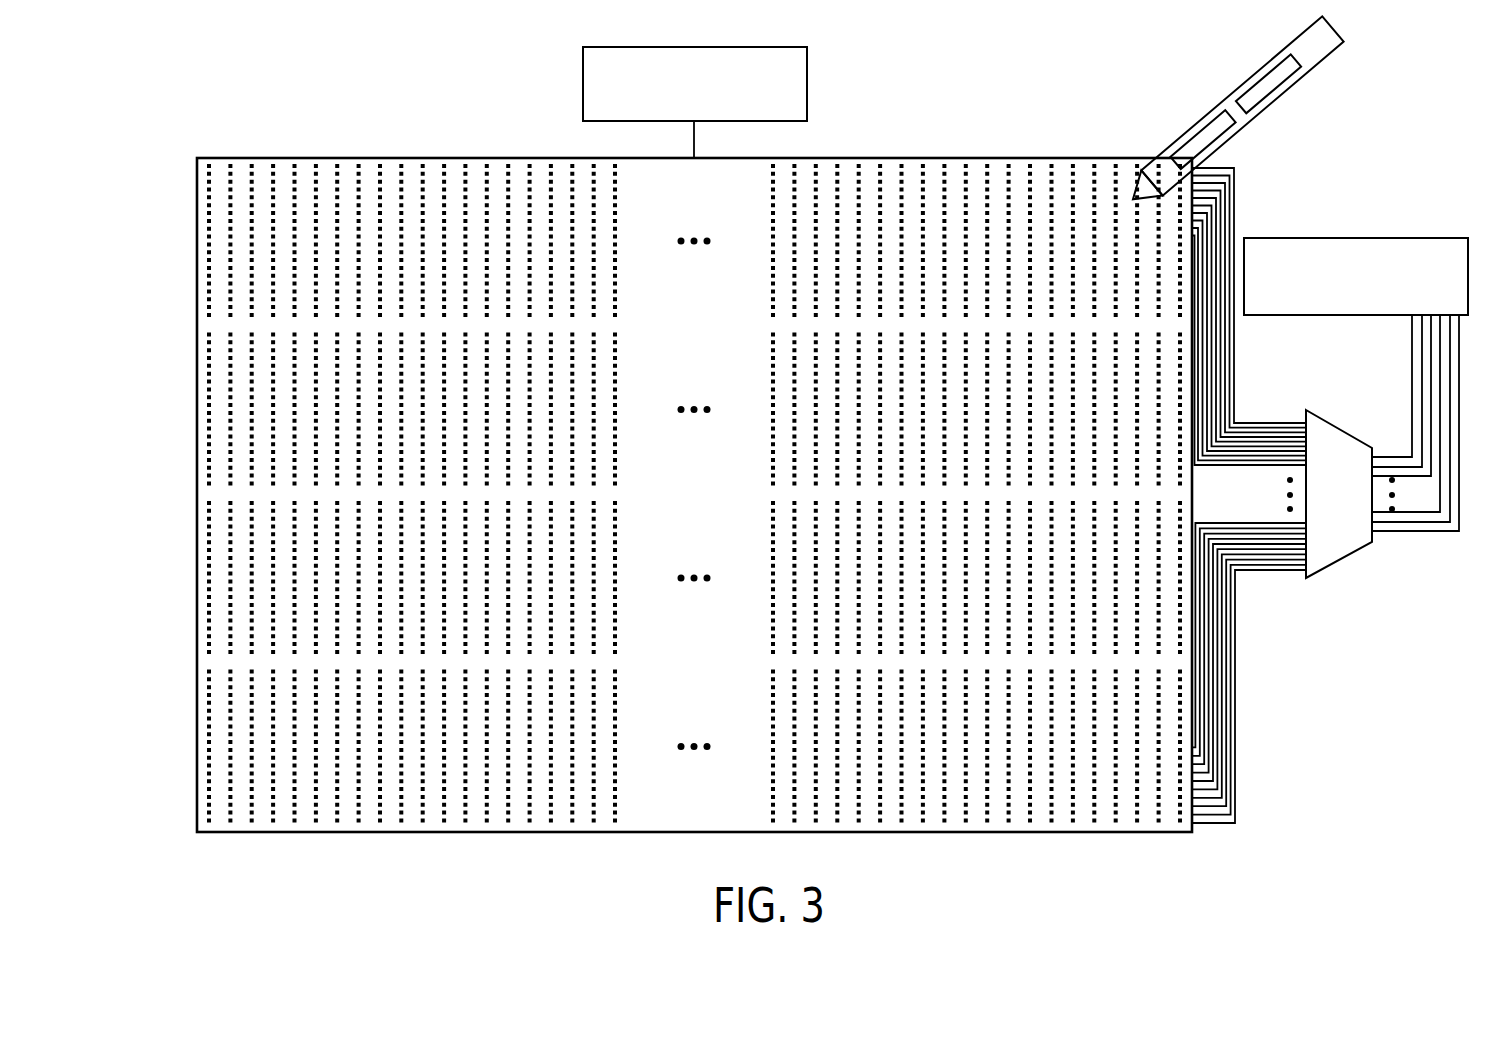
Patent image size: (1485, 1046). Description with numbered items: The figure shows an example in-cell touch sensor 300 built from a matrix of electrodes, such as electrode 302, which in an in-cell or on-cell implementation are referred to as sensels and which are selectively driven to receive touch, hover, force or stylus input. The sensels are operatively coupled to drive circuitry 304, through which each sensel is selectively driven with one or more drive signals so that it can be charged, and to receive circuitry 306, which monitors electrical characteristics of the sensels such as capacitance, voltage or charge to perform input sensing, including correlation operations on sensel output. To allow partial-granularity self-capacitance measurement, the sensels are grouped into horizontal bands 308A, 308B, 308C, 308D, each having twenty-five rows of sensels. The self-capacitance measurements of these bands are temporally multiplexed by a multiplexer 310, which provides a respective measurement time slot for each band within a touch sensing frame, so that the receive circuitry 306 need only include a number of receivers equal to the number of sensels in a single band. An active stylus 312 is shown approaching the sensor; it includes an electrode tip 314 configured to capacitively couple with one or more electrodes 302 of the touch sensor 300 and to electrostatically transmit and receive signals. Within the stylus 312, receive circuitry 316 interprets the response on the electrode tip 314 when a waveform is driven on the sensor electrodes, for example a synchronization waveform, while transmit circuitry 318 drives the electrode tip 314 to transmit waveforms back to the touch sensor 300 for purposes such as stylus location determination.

The touch sensor 300 is at (961, 68).
The electrode 302 is at (316, 166).
The drive circuitry 304 is at (711, 110).
The receive circuitry 306 is at (1373, 302).
The horizontal band 308A is at (197, 161).
The horizontal band 308B is at (197, 329).
The horizontal band 308C is at (197, 498).
The horizontal band 308D is at (197, 666).
The multiplexer 310 is at (1355, 520).
The active stylus 312 is at (1263, 109).
The electrode tip 314 is at (1142, 190).
The receive circuitry 316 is at (1202, 139).
The transmit circuitry 318 is at (1268, 83).